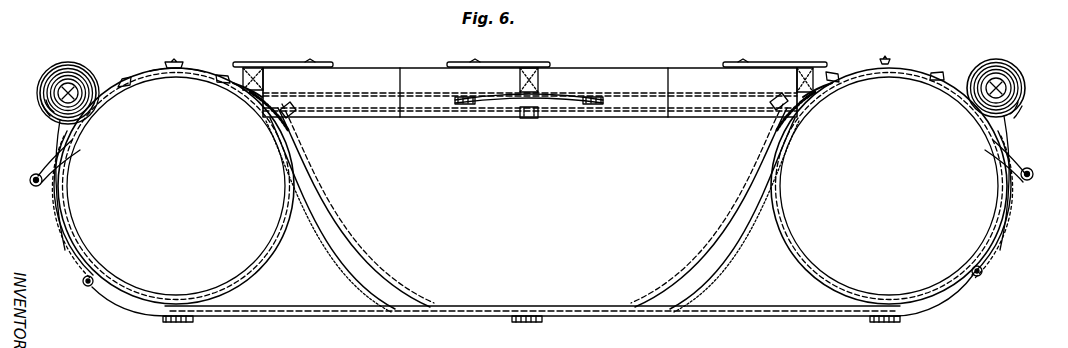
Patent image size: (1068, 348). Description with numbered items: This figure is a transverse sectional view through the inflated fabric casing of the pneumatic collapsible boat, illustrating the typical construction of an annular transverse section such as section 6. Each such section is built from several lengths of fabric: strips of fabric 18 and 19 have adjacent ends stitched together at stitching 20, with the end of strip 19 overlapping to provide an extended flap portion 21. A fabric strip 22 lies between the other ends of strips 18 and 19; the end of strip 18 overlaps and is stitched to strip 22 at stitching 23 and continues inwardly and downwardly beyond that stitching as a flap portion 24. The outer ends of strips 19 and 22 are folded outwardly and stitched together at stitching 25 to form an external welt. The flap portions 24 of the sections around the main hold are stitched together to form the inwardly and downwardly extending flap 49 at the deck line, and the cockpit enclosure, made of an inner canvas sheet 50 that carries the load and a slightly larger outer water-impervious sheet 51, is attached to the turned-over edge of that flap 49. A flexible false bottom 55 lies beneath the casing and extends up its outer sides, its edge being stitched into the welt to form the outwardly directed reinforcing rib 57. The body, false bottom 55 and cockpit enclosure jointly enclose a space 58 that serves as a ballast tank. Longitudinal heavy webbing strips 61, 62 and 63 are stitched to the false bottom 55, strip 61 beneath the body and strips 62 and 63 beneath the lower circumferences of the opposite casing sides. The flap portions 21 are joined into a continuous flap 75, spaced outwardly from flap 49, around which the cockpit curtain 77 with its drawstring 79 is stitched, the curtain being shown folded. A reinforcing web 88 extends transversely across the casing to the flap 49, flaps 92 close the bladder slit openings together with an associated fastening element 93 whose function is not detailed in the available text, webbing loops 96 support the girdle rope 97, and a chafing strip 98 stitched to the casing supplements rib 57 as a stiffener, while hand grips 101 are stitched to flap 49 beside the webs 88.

The annular transverse casing section 6 is at (594, 68).
The fabric strip 18 is at (176, 78).
The fabric strip 19 is at (70, 150).
The stitching 20 is at (66, 133).
The flap portion 21 is at (44, 112).
The fabric strip 22 is at (284, 222).
The stitching 23 is at (258, 98).
The flap portion 24 is at (266, 120).
The stitching 25 is at (94, 296).
The flap 49 is at (372, 104).
The canvas sheet 50 is at (345, 238).
The water-impervious sheet 51 is at (348, 283).
The false bottom 55 is at (304, 318).
The reinforcing rib 57 is at (80, 286).
The space 58 is at (770, 312).
The flexible strip 61 is at (527, 322).
The flexible strip 62 is at (172, 322).
The flexible strip 63 is at (872, 322).
The continuous flap 75 is at (38, 90).
The cockpit curtain 77 is at (66, 66).
The drawstring 79 is at (62, 85).
The reinforcing web 88 is at (528, 118).
The flap 92 is at (127, 78).
The lug 93 is at (176, 60).
The webbing loop 96 is at (28, 176).
The girdle rope 97 is at (33, 186).
The chafing strip 98 is at (60, 222).
The hand grip 101 is at (505, 101).